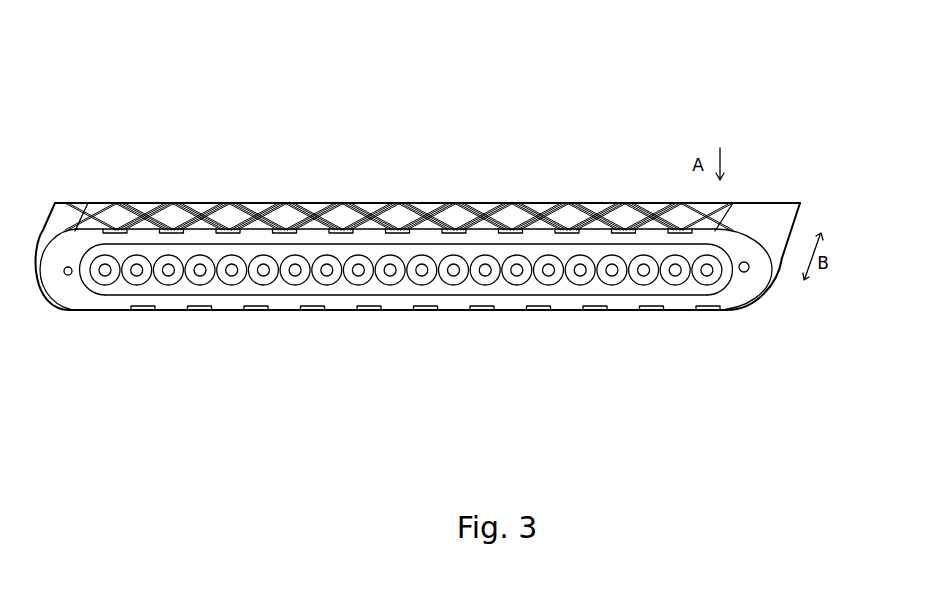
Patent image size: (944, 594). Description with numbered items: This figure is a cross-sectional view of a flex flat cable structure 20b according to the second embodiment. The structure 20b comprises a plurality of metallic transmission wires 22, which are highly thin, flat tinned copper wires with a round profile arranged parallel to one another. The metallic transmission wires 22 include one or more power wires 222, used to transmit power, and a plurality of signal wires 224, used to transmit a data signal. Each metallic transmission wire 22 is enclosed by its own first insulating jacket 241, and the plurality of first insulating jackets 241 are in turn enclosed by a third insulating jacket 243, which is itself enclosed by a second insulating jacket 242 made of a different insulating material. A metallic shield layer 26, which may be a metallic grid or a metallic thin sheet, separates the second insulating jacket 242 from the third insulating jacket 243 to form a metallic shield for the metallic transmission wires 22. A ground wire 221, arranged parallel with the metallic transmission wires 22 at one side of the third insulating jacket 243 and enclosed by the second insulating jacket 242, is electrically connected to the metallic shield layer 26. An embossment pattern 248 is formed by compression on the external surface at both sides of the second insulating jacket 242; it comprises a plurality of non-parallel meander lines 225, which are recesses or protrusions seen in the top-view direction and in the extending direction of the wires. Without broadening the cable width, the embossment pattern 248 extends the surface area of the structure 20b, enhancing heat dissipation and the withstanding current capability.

The flex flat cable structure 20b is at (431, 30).
The metallic transmission wire 22 is at (162, 112).
The signal wire 224 is at (107, 267).
The power wire 222 is at (173, 262).
The meander line 225 is at (302, 202).
The embossment pattern 248 is at (348, 213).
The metallic shield layer 26 is at (417, 247).
The ground wire 221 is at (746, 262).
The first insulating jacket 241 is at (146, 280).
The third insulating jacket 243 is at (423, 290).
The second insulating jacket 242 is at (590, 307).